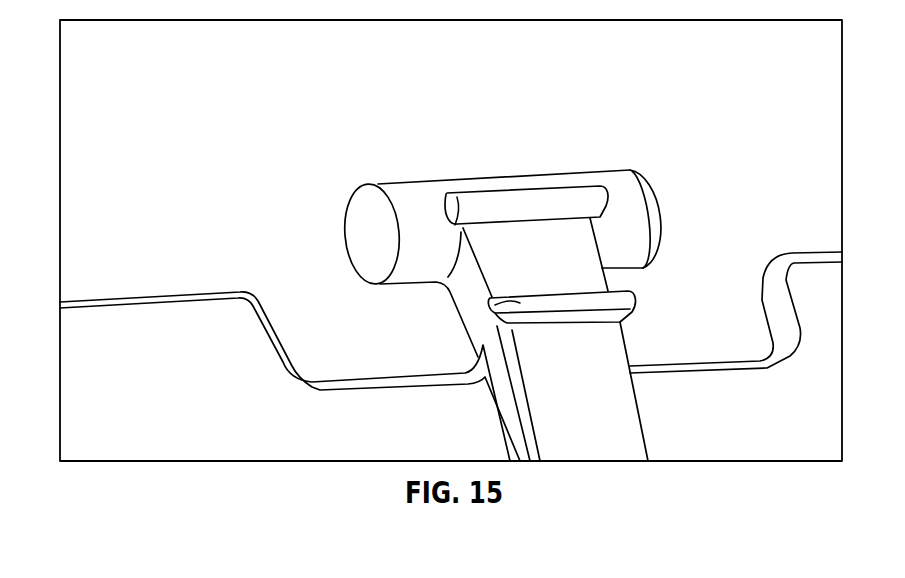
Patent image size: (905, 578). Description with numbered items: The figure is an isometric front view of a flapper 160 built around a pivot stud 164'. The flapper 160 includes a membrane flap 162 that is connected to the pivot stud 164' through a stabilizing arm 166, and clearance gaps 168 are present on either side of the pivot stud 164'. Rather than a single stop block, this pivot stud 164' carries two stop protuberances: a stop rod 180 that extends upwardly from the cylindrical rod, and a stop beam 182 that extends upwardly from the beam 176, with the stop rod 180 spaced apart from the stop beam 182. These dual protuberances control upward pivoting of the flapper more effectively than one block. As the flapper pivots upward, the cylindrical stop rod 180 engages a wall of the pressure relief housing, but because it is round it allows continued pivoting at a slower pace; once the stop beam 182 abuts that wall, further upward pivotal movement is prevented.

The flapper 160 is at (566, 142).
The membrane flap 162 is at (140, 332).
The pivot stud 164' is at (496, 209).
The stabilizing arm 166 is at (602, 442).
The clearance gaps 168 is at (312, 325).
The beam 176 is at (547, 258).
The stop rod 180 is at (533, 205).
The stop beam 182 is at (503, 306).